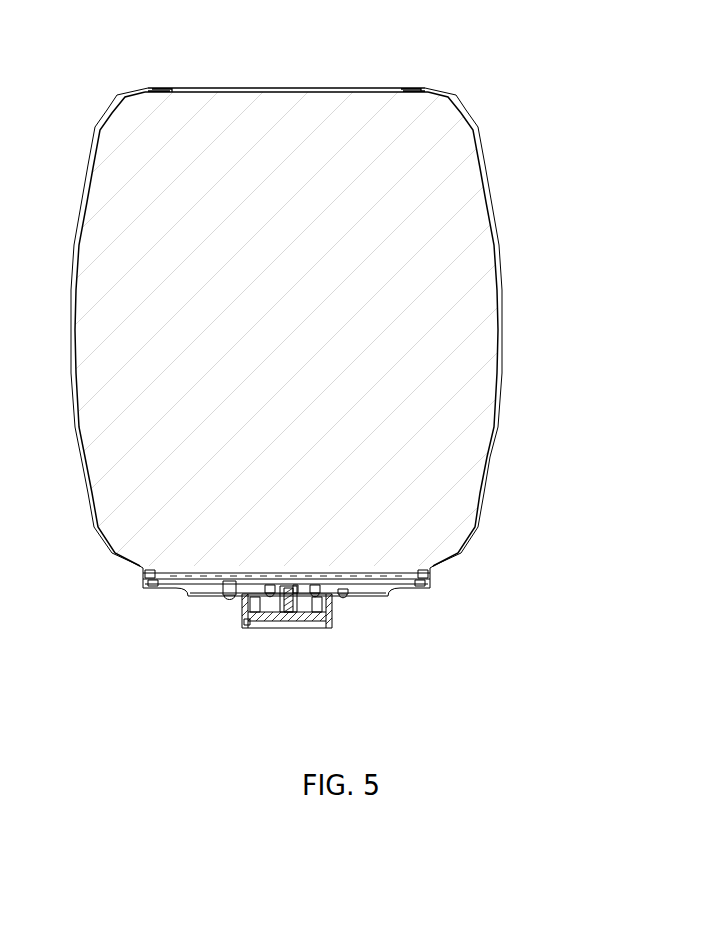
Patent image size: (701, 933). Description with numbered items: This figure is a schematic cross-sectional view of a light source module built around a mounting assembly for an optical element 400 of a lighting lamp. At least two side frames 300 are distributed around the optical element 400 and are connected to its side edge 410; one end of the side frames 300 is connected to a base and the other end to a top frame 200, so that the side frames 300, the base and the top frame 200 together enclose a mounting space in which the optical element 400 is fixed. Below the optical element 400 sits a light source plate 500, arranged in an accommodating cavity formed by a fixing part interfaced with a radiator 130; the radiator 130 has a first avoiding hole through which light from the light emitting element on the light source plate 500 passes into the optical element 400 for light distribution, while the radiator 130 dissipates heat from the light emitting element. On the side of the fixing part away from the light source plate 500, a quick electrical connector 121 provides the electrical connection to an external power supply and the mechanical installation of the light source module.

The top frame 200 is at (302, 88).
The side frames 300 is at (501, 316).
The side edge 410 is at (500, 252).
The optical element 400 is at (453, 346).
The light source plate 500 is at (386, 590).
The radiator 130 is at (419, 590).
The quick electrical connector 121 is at (288, 628).